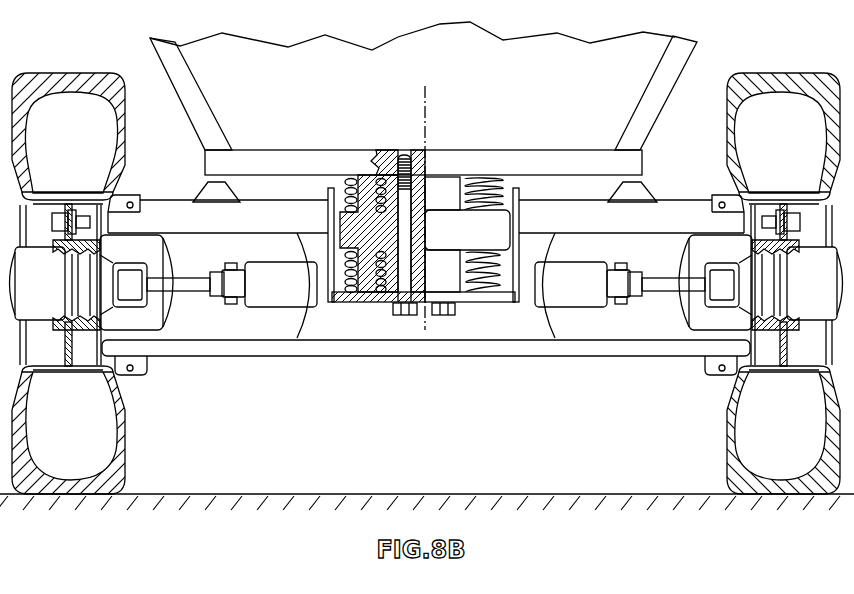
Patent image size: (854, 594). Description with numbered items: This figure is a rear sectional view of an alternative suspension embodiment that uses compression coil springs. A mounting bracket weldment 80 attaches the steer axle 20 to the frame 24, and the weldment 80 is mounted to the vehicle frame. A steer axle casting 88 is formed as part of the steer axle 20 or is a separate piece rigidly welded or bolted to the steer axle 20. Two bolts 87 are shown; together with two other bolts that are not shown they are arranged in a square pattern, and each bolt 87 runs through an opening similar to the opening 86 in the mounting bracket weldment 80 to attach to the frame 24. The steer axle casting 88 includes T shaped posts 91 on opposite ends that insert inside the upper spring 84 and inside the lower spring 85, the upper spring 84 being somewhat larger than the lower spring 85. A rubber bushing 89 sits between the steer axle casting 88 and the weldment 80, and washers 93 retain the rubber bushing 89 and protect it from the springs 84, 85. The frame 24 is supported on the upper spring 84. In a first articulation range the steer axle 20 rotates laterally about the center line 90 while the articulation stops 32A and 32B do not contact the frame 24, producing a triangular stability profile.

The steer axle 20 is at (163, 200).
The frame 24 is at (285, 158).
The articulation stop 32A is at (221, 200).
The articulation stop 32B is at (633, 200).
The mounting bracket weldment 80 is at (505, 302).
The upper spring 84 is at (480, 190).
The lower spring 85 is at (482, 284).
The opening 86 is at (447, 177).
The bolts 87 is at (445, 320).
The steer axle casting 88 is at (329, 213).
The rubber bushing 89 is at (397, 227).
The center line 90 is at (429, 95).
The T shaped posts 91 is at (364, 192).
The washers 93 is at (397, 195).